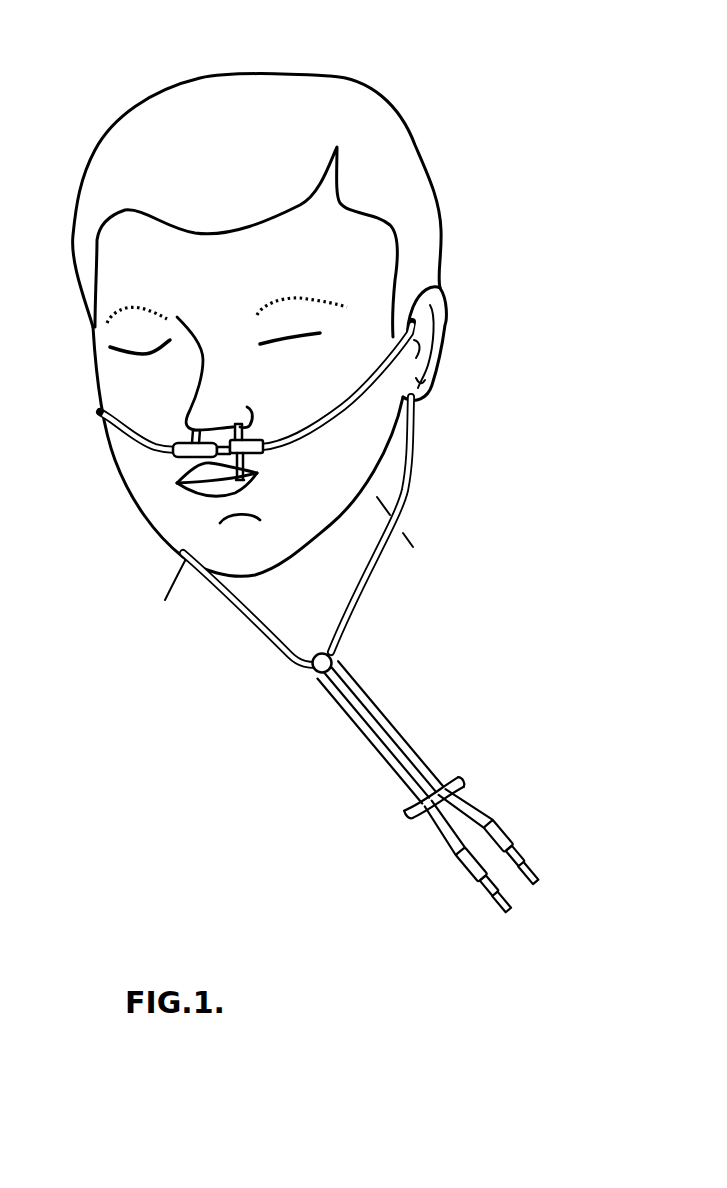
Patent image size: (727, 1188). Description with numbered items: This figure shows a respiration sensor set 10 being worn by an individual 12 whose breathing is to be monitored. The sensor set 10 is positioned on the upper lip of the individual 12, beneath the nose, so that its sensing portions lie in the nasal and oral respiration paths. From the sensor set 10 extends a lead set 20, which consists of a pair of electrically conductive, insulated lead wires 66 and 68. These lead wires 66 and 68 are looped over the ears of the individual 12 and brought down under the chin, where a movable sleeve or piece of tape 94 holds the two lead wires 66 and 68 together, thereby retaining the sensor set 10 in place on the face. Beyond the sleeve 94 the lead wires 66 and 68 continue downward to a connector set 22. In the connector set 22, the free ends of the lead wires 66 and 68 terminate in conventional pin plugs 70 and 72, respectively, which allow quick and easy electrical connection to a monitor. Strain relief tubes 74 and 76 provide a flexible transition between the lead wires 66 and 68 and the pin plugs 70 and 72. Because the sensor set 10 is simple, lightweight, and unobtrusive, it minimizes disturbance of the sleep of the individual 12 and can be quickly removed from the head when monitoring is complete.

The respiration sensor set 10 is at (168, 457).
The individual 12 is at (330, 75).
The lead set 20 is at (323, 621).
The connector set 22 is at (499, 866).
The lead wire 66 is at (412, 744).
The lead wire 68 is at (390, 764).
The pin plug 70 is at (528, 873).
The pin plug 72 is at (501, 902).
The strain relief tube 74 is at (505, 844).
The strain relief tube 76 is at (478, 872).
The movable sleeve or piece of tape 94 is at (313, 674).